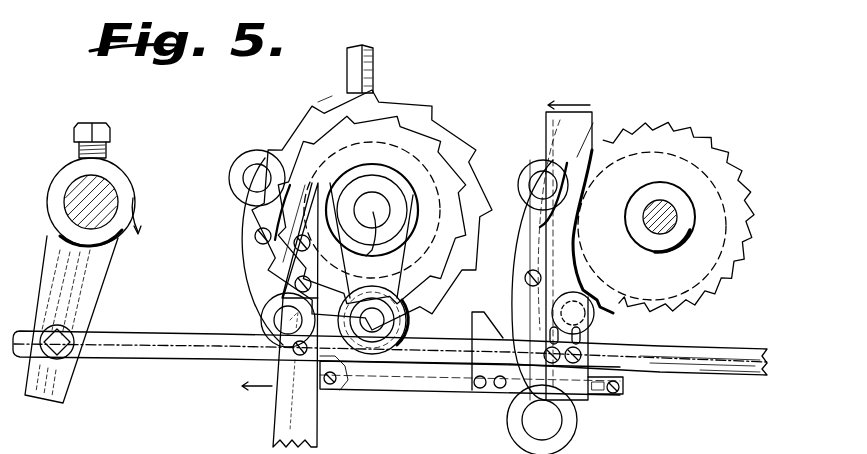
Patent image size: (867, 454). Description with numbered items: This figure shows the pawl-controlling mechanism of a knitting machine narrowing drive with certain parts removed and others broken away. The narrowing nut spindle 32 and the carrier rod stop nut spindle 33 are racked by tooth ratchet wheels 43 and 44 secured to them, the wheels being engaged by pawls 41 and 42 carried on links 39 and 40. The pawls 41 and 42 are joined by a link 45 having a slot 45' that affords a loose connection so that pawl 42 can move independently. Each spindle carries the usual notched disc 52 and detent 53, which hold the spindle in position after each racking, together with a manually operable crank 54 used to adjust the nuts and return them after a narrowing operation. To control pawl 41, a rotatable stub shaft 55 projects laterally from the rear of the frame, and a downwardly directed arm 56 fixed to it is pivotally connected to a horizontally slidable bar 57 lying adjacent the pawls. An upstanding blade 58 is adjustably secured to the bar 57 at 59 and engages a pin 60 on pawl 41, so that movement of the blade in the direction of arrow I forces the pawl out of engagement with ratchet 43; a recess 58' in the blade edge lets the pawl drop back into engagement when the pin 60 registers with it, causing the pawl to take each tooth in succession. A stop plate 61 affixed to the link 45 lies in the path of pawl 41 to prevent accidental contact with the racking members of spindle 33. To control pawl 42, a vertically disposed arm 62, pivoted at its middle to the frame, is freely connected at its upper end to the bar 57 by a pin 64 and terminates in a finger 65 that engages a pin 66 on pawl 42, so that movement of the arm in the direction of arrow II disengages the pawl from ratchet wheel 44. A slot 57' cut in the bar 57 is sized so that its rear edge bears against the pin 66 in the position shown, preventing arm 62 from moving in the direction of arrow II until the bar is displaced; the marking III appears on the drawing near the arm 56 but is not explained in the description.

The narrowing nut spindle 32 is at (655, 232).
The carrier rod stop nut spindle 33 is at (371, 240).
The link 39 is at (605, 306).
The link 40 is at (255, 158).
The pawl 41 is at (538, 240).
The pawl 42 is at (262, 258).
The ratchet wheel 43 is at (708, 104).
The ratchet wheel 44 is at (385, 125).
The link 45 is at (470, 391).
The slot 45' is at (632, 399).
The notched disc 52 is at (335, 100).
The detent 53 is at (362, 70).
The manually operable crank 54 is at (388, 290).
The rotatable stub shaft 55 is at (112, 185).
The downwardly directed arm 56 is at (50, 258).
The horizontally slidable bar 57 is at (390, 359).
The slot 57' is at (343, 384).
The upstanding blade 58 is at (589, 241).
The recess 58' is at (575, 198).
The adjustable securing means 59 is at (588, 398).
The pin 60 is at (525, 278).
The stop plate 61 is at (478, 328).
The vertically disposed arm 62 is at (305, 437).
The pin 64 is at (262, 335).
The finger 65 is at (336, 165).
The pin 66 is at (255, 238).
The arrow I is at (569, 97).
The arrow II is at (257, 378).
The view direction arrow III is at (144, 216).